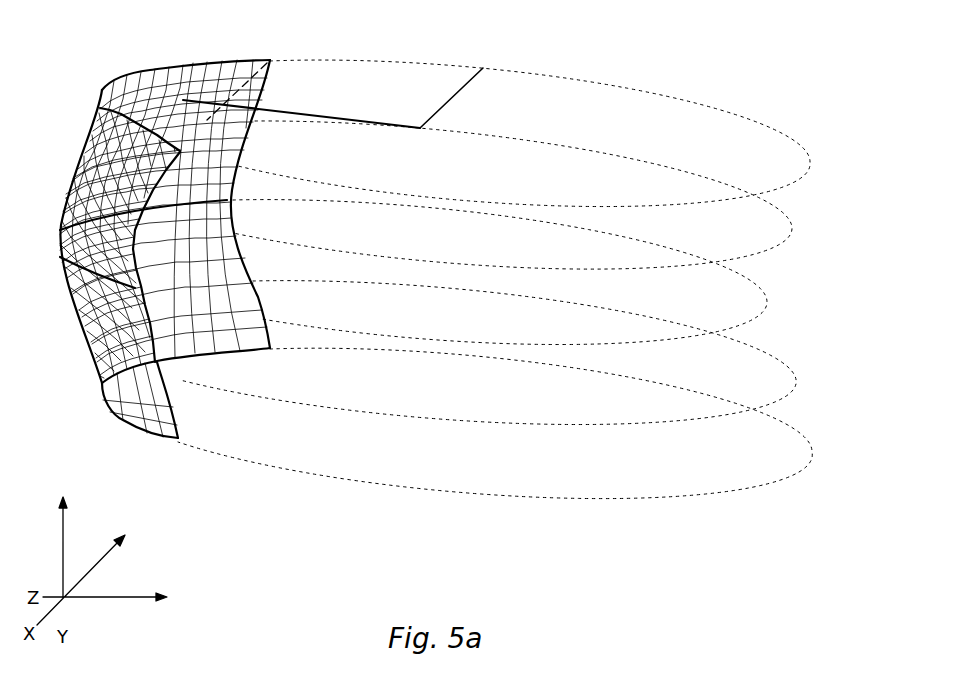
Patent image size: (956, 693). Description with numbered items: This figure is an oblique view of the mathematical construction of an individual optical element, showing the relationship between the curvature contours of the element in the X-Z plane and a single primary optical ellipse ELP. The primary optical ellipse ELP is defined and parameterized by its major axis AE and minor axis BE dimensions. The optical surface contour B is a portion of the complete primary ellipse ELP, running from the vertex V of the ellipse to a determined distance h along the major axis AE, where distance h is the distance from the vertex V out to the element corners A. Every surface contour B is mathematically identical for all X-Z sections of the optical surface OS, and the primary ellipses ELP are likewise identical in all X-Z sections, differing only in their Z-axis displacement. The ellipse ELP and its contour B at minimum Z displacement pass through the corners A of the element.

The vertex V is at (102, 88).
The optical surface contour B is at (148, 70).
The distance h is at (181, 100).
The element corners A is at (270, 60).
The major axis AE is at (305, 110).
The minor axis BE is at (453, 97).
The primary optical ellipse ELP is at (565, 76).
The optical surface OS is at (143, 421).